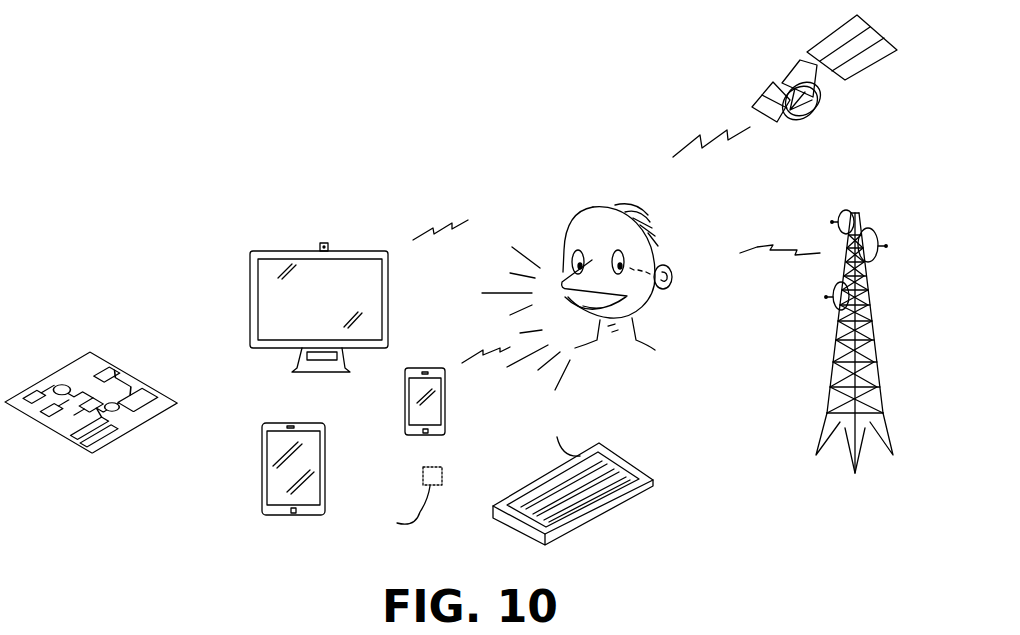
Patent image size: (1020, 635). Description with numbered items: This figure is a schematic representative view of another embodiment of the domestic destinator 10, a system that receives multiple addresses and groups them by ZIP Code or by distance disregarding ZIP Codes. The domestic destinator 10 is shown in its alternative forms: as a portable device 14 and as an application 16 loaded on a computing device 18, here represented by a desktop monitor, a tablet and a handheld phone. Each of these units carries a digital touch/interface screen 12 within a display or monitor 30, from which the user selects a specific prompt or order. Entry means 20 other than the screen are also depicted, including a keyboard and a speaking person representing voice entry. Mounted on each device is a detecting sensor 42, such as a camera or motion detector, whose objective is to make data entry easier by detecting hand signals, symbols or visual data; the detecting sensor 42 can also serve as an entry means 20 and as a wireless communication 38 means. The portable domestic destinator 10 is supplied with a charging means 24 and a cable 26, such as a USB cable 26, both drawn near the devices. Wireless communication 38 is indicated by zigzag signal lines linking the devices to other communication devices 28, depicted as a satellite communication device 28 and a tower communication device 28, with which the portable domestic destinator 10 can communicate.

The domestic destinator 10 is at (122, 124).
The digital touch/interface screen 12 is at (368, 270).
The portable device 14 is at (318, 369).
The application 16 is at (63, 378).
The computing device 18 is at (318, 369).
The entry means 20 is at (600, 503).
The charging means 24 is at (442, 477).
The cable 26 is at (396, 509).
The communication devices 28 is at (863, 65).
The display or monitor 30 is at (366, 253).
The wireless communication means 38 is at (423, 237).
The detecting sensor 42 is at (323, 243).